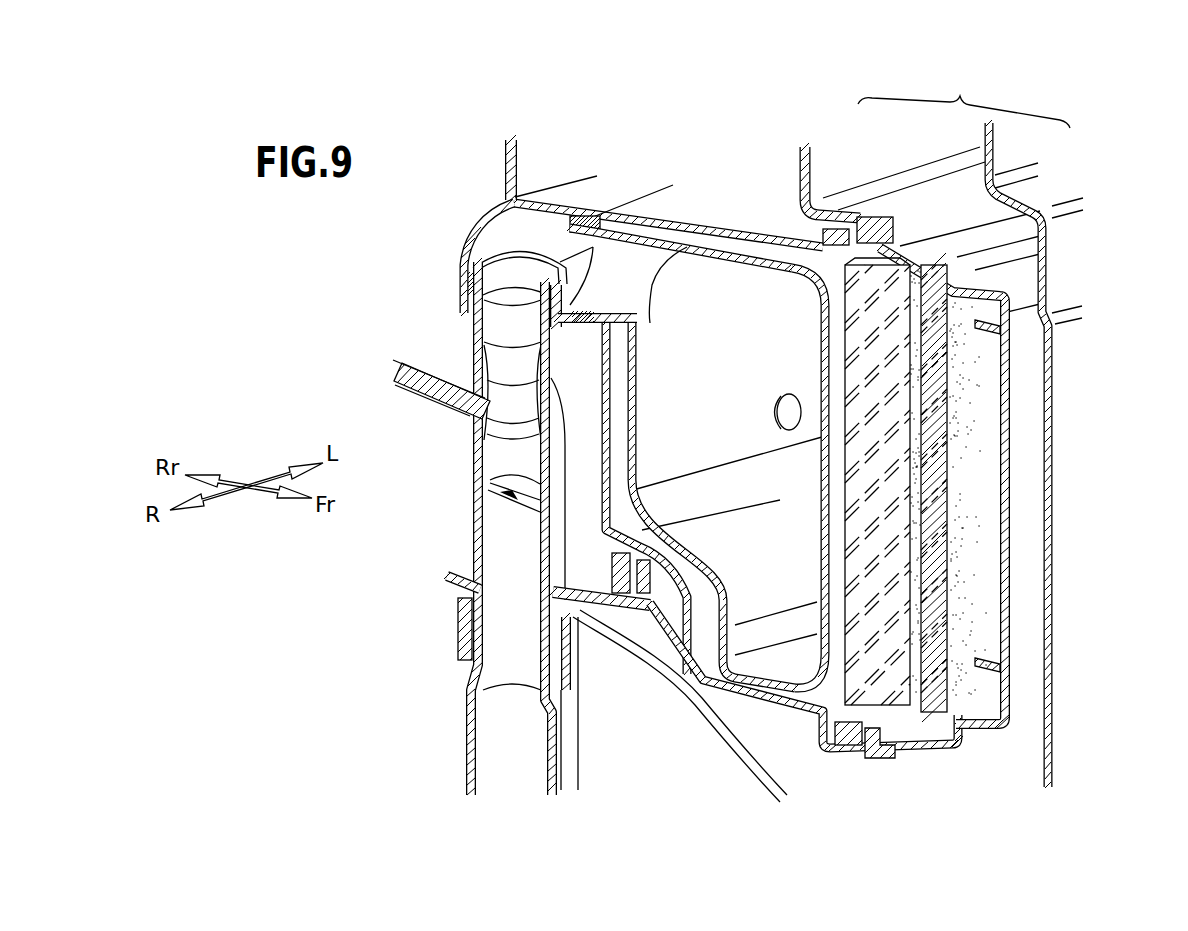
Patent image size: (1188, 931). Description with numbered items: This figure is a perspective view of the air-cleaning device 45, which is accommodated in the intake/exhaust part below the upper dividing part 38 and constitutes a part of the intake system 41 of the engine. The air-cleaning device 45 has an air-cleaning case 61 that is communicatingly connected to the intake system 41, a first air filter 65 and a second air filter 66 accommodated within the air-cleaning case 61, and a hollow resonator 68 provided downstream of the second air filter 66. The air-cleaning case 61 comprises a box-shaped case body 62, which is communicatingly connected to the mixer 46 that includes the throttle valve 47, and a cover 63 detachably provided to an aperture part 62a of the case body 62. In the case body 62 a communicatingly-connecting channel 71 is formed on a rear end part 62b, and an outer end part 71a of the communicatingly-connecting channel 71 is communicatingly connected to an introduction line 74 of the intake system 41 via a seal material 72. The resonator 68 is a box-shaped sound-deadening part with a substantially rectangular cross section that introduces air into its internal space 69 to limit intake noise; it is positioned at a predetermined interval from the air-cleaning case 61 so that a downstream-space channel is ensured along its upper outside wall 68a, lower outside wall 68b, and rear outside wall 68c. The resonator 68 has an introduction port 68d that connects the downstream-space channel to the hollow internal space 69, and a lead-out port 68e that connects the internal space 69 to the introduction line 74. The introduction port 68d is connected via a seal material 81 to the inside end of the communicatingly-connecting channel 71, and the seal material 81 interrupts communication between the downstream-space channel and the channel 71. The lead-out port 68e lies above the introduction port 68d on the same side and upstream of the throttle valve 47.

The upper dividing part 38 is at (752, 775).
The intake system 41 is at (487, 146).
The air-cleaning device 45 is at (676, 186).
The mixer 46 is at (465, 405).
The throttle valve 47 is at (505, 486).
The air-cleaning case 61 is at (953, 197).
The case body 62 is at (790, 210).
The aperture part 62a is at (876, 760).
The rear end part 62b is at (574, 200).
The cover 63 is at (968, 232).
The first air filter 65 is at (968, 383).
The second air filter 66 is at (918, 512).
The hollow resonator 68 is at (752, 240).
The upper outside wall 68a is at (704, 238).
The lower outside wall 68b is at (778, 695).
The rear outside wall 68c is at (612, 445).
The introduction port 68d is at (785, 395).
The lead-out port 68e is at (590, 297).
The internal space 69 is at (703, 448).
The communicatingly-connecting channel 71 is at (488, 228).
The outer end part 71a is at (460, 283).
The seal material 72 is at (462, 262).
The introduction line 74 is at (478, 345).
The seal material 81 is at (584, 222).